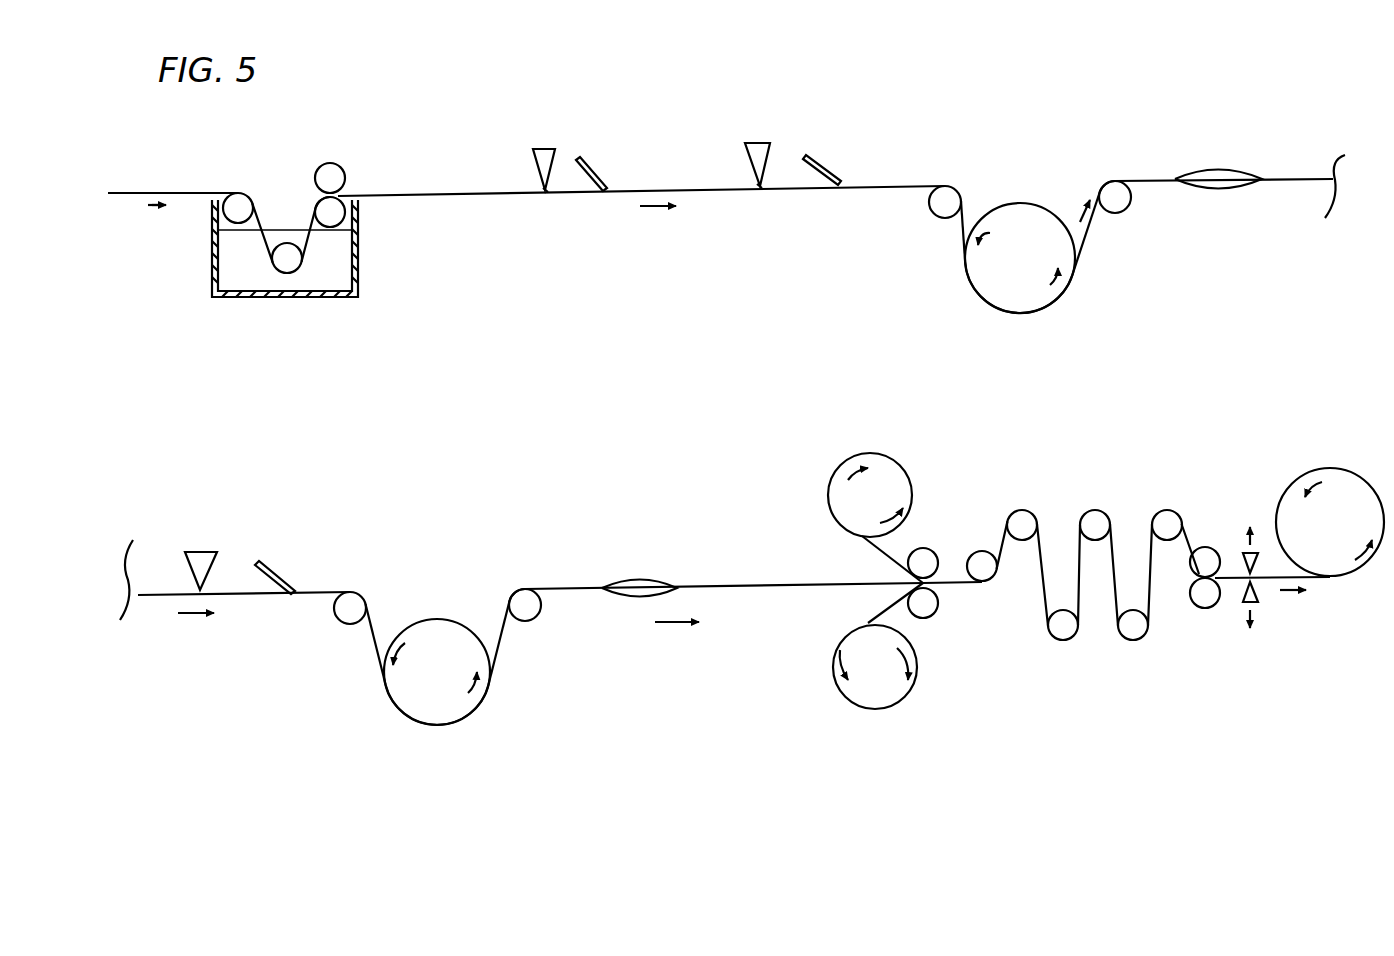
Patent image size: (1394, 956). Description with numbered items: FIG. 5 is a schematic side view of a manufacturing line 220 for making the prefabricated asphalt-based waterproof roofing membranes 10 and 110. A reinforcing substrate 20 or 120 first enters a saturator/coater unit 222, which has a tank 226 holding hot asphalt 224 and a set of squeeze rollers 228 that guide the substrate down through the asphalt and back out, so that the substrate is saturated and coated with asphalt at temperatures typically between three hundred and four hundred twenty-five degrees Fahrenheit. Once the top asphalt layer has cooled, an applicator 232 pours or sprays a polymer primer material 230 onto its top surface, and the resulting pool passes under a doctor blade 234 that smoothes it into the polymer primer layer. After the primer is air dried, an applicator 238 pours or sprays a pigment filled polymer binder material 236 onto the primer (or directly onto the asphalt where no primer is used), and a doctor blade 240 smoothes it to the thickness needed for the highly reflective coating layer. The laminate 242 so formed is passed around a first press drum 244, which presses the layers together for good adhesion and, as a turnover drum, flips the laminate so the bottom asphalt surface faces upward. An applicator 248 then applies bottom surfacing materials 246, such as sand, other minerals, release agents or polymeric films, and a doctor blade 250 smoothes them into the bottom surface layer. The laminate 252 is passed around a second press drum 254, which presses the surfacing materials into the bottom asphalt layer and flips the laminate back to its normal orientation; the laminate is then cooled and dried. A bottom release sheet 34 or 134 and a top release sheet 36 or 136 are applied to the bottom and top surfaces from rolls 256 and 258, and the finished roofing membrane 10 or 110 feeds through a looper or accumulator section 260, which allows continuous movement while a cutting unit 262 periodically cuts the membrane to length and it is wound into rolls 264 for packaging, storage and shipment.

The reinforcing substrate 20 is at (503, 161).
The reinforcing substrate 120 is at (142, 191).
The manufacturing line 220 is at (884, 90).
The saturator/coater unit 222 is at (408, 294).
The asphalt 224 is at (227, 266).
The tank 226 is at (278, 300).
The squeeze rollers 228 is at (336, 164).
The polymer primer material 230 is at (543, 188).
The applicator 232 is at (553, 150).
The doctor blade 234 is at (605, 168).
The pigment filled polymer binder material 236 is at (757, 184).
The applicator 238 is at (768, 150).
The doctor blade 240 is at (830, 168).
The laminate 242 is at (918, 186).
The first press drum 244 is at (1153, 234).
The bottom surfacing materials 246 is at (198, 590).
The applicator 248 is at (207, 552).
The doctor blade 250 is at (283, 570).
The laminate 252 is at (332, 590).
The second press drum 254 is at (645, 653).
The roll 256 is at (843, 696).
The roll 258 is at (831, 493).
The bottom release sheet 34 is at (831, 614).
The bottom release sheet 134 is at (868, 623).
The top release sheet 36 is at (815, 559).
The top release sheet 136 is at (868, 538).
The looper or accumulator section 260 is at (1104, 484).
The cutting unit 262 is at (1233, 634).
The rolls 264 is at (1280, 468).
The prefabricated asphalt-based waterproof roofing membrane 10 is at (1304, 623).
The prefabricated asphalt-based waterproof roofing membrane 110 is at (1315, 582).